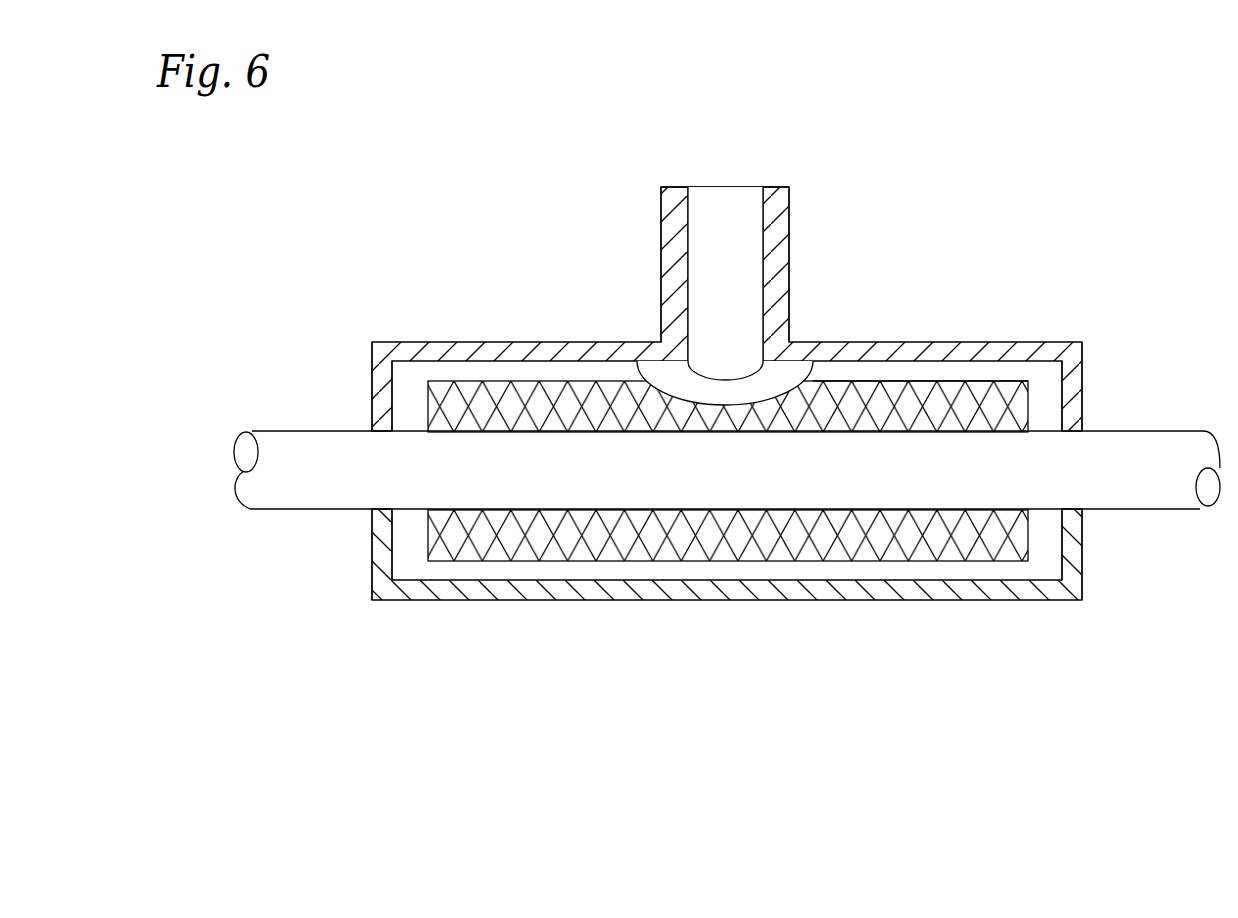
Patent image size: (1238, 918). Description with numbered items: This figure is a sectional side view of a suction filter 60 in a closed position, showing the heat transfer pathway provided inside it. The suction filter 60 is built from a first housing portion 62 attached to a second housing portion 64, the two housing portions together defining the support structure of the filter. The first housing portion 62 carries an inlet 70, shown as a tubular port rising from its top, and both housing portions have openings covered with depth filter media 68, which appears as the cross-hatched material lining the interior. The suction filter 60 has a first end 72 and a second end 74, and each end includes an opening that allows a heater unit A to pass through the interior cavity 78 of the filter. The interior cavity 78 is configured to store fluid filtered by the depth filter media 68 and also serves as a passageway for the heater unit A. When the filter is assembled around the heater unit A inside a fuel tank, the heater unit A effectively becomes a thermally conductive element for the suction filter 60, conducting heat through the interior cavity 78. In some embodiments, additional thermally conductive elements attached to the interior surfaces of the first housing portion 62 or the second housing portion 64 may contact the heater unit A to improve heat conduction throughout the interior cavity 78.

The suction filter 60 is at (515, 212).
The first housing portion 62 is at (916, 343).
The second housing portion 64 is at (511, 600).
The depth filter media 68 is at (512, 400).
The inlet 70 is at (705, 187).
The first end 72 is at (372, 392).
The second end 74 is at (1082, 368).
The interior cavity 78 is at (858, 396).
The heater unit A is at (1148, 509).